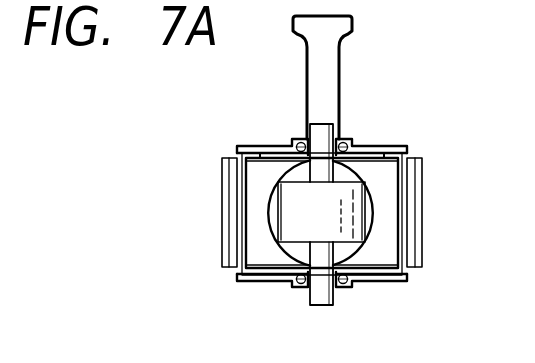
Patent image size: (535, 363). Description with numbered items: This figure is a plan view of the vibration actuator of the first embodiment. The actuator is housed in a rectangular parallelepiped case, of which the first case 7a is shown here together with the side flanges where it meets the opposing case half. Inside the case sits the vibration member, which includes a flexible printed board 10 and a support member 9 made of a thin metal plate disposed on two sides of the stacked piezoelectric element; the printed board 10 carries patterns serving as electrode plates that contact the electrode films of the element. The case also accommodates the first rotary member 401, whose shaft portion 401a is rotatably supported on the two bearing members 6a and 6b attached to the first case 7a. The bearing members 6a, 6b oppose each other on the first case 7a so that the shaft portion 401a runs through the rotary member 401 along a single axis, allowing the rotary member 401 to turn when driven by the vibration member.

The flexible printed board 10 is at (336, 64).
The shaft portion 401a is at (312, 124).
The bearing member 6b is at (361, 139).
The first case 7a is at (400, 147).
The support member 9 is at (388, 193).
The first rotary member 401 is at (290, 221).
The bearing member 6a is at (352, 283).